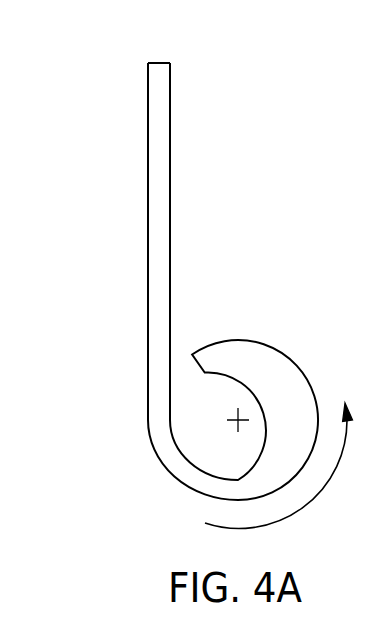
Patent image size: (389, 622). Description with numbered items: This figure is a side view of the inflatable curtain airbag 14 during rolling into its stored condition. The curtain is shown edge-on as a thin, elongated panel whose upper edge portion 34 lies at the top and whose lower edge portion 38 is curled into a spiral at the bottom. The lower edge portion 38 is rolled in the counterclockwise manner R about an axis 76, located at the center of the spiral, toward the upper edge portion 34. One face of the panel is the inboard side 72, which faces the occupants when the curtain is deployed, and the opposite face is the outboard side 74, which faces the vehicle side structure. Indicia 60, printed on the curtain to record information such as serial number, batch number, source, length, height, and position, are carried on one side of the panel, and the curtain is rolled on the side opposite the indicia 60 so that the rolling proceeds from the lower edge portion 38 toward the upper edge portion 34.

The inflatable curtain airbag 14 is at (158, 260).
The upper edge portion 34 is at (157, 62).
The lower edge portion 38 is at (204, 372).
The indicia 60 is at (122, 150).
The inboard side 72 is at (74, 88).
The outboard side 74 is at (199, 99).
The axis 76 is at (240, 418).
The counterclockwise manner R is at (306, 499).